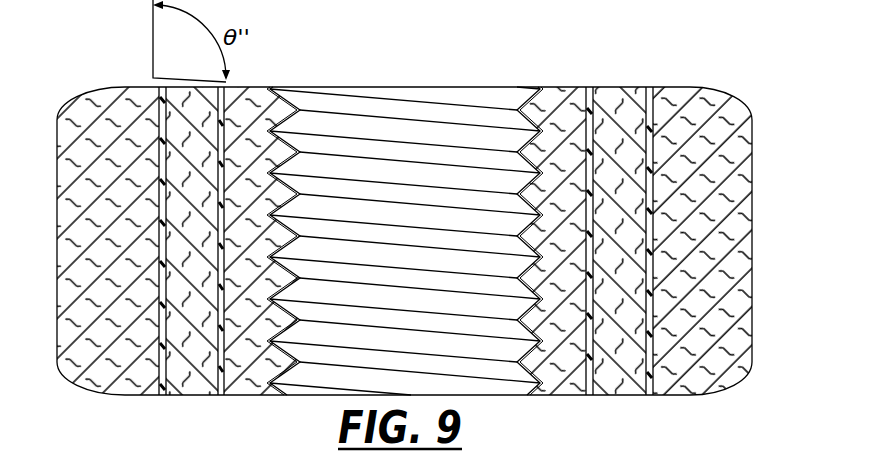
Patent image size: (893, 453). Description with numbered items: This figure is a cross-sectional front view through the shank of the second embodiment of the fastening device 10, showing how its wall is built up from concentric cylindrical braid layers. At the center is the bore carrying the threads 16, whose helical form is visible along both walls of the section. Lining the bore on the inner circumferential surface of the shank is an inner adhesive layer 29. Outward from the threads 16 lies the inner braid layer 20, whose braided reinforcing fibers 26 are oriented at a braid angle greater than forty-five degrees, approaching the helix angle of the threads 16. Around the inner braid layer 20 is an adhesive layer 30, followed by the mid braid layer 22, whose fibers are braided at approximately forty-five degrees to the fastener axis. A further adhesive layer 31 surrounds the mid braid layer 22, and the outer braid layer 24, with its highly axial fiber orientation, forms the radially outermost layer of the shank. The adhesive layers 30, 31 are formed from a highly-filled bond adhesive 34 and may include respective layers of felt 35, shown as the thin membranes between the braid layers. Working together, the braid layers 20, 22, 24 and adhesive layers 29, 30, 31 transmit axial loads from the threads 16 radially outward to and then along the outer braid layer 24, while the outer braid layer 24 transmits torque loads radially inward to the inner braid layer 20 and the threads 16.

The fastening device 10 is at (436, 240).
The threads 16 is at (296, 368).
The inner braid layer 20 is at (551, 370).
The mid braid layer 22 is at (618, 372).
The outer braid layer 24 is at (685, 368).
The braided reinforcing fibers 26 is at (404, 266).
The inner adhesive layer 29 is at (536, 90).
The adhesive layer 30 is at (591, 90).
The adhesive layer 31 is at (650, 90).
The highly-filled bond adhesive 34 is at (161, 104).
The felt layer 35 is at (222, 106).